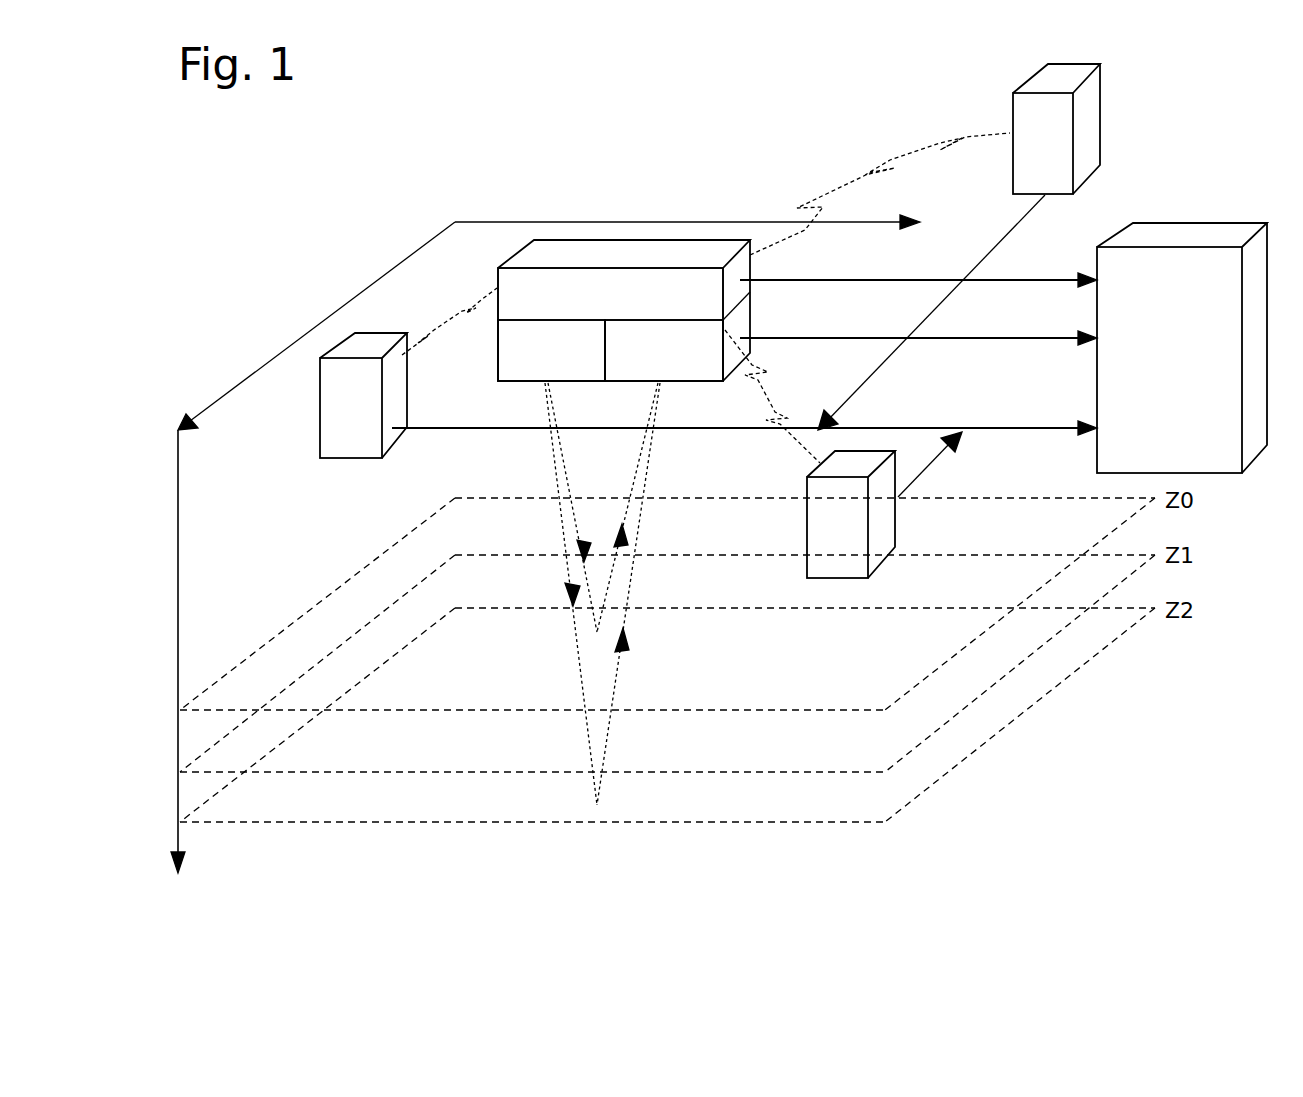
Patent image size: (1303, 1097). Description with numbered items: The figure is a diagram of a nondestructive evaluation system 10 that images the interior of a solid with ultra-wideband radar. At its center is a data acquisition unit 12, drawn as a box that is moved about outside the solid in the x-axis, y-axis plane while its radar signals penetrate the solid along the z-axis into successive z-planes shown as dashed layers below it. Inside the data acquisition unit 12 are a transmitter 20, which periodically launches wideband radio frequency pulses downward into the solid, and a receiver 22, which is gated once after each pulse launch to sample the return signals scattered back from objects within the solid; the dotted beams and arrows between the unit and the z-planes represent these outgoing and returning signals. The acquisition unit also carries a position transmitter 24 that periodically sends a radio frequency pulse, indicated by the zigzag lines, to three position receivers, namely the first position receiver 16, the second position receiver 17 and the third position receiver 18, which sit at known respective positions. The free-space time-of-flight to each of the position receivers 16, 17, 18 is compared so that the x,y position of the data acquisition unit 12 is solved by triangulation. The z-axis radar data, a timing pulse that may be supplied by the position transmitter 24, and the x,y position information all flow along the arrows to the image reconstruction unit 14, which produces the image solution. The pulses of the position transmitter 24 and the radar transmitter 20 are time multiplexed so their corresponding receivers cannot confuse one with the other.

The nondestructive evaluation system 10 is at (340, 190).
The data acquisition unit 12 is at (609, 240).
The image reconstruction unit 14 is at (1097, 399).
The position receiver R1 16 is at (369, 343).
The position receiver R2 17 is at (1100, 128).
The position receiver R3 18 is at (807, 545).
The transmitter 20 is at (551, 350).
The receiver 22 is at (664, 350).
The position transmitter 24 is at (610, 294).